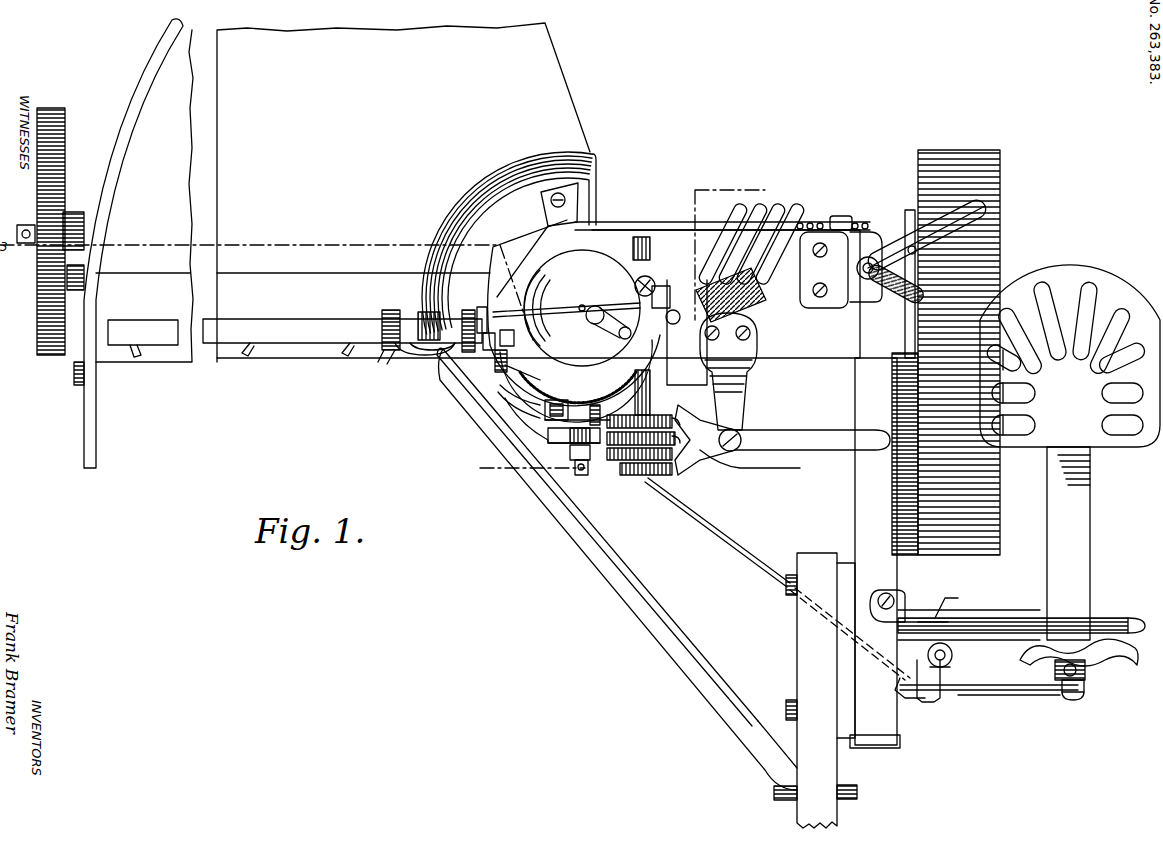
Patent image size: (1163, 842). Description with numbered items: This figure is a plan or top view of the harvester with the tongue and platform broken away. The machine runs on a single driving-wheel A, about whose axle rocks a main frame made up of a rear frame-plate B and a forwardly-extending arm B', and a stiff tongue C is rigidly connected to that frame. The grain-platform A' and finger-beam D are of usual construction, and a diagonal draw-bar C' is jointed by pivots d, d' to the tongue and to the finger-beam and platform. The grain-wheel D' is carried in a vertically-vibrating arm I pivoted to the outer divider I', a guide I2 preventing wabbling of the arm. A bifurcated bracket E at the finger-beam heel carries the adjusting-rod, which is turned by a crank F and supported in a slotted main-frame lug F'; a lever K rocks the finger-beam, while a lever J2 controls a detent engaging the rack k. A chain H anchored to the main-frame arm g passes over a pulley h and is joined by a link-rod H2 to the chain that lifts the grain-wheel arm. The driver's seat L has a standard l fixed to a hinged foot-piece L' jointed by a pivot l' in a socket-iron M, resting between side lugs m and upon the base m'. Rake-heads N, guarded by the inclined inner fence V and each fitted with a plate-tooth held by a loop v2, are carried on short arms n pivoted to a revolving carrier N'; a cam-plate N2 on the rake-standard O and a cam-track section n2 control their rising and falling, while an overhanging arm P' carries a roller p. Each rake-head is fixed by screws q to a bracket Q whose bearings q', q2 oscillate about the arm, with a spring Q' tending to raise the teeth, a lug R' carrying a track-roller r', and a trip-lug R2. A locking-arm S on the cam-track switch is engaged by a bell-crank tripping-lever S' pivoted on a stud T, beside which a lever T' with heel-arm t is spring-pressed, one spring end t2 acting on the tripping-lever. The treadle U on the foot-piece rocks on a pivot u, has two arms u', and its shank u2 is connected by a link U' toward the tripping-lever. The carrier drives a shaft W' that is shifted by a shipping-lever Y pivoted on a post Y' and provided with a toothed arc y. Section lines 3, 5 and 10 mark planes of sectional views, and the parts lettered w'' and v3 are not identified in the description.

The grain-wheel D' is at (35, 231).
The vertically-vibrating arm I is at (123, 243).
The guide I2 is at (85, 284).
The outer divider I' is at (67, 374).
The grain-platform A' is at (403, 192).
The finger-beam D is at (538, 294).
The rake-head N is at (342, 331).
The loop v2 is at (345, 353).
The inner fence V is at (480, 200).
The cam-track section n2 is at (574, 313).
The rake-carrying arm n is at (576, 381).
The cam-plate N2 is at (582, 308).
The overhanging arm P' is at (608, 330).
The roller p is at (609, 329).
The trip-lug R2 is at (559, 326).
The revolving carrier N' is at (686, 279).
The cam-track traveling roller r' is at (650, 270).
The bracket Q is at (540, 317).
The lug-bearing q2 is at (537, 319).
The screws q is at (384, 365).
The spring Q' is at (424, 314).
The lug-bearing q' is at (474, 319).
The pivot d' is at (589, 537).
The lug R' is at (492, 369).
The detent rack k is at (515, 347).
The section line 5 is at (522, 381).
The locking-arm S is at (519, 401).
The tripping-lever S' is at (552, 420).
The heel-lug t is at (577, 421).
The spring end t2 is at (601, 412).
The lever T' is at (564, 452).
The stud-shaft T is at (582, 473).
The shaft W' is at (641, 422).
The gear teeth w'' is at (685, 419).
The rake-standard O is at (676, 372).
The section line 10 is at (639, 463).
The post Y' is at (728, 371).
The shipping-lever Y is at (804, 440).
The toothed arc y is at (705, 440).
The link-rod H2 is at (722, 215).
The section line 3 is at (736, 247).
The chain H is at (832, 212).
The pulley h is at (841, 210).
The bifurcated bracket E is at (850, 268).
The main-frame arm g is at (872, 230).
The main-frame lug F' is at (878, 238).
The lever K is at (922, 277).
The lever J2 is at (927, 228).
The frame-plate B is at (926, 242).
The crank F is at (903, 288).
The driving-wheel A is at (946, 352).
The driver's seat L is at (1070, 356).
The seat standard l is at (1068, 543).
The foot-piece L' is at (1021, 615).
The treadle U is at (990, 621).
The socket-iron M is at (895, 606).
The pivot l' is at (946, 603).
The bracket base m' is at (946, 611).
The side lugs m is at (930, 655).
The link U' is at (986, 696).
The treadle arms u' is at (1070, 654).
The pivot u is at (1082, 679).
The treadle shank u2 is at (1078, 700).
The frame arm B' is at (875, 553).
The tongue C is at (848, 690).
The pivot d is at (774, 796).
The draw-bar C' is at (618, 569).
The rod v3 is at (717, 532).